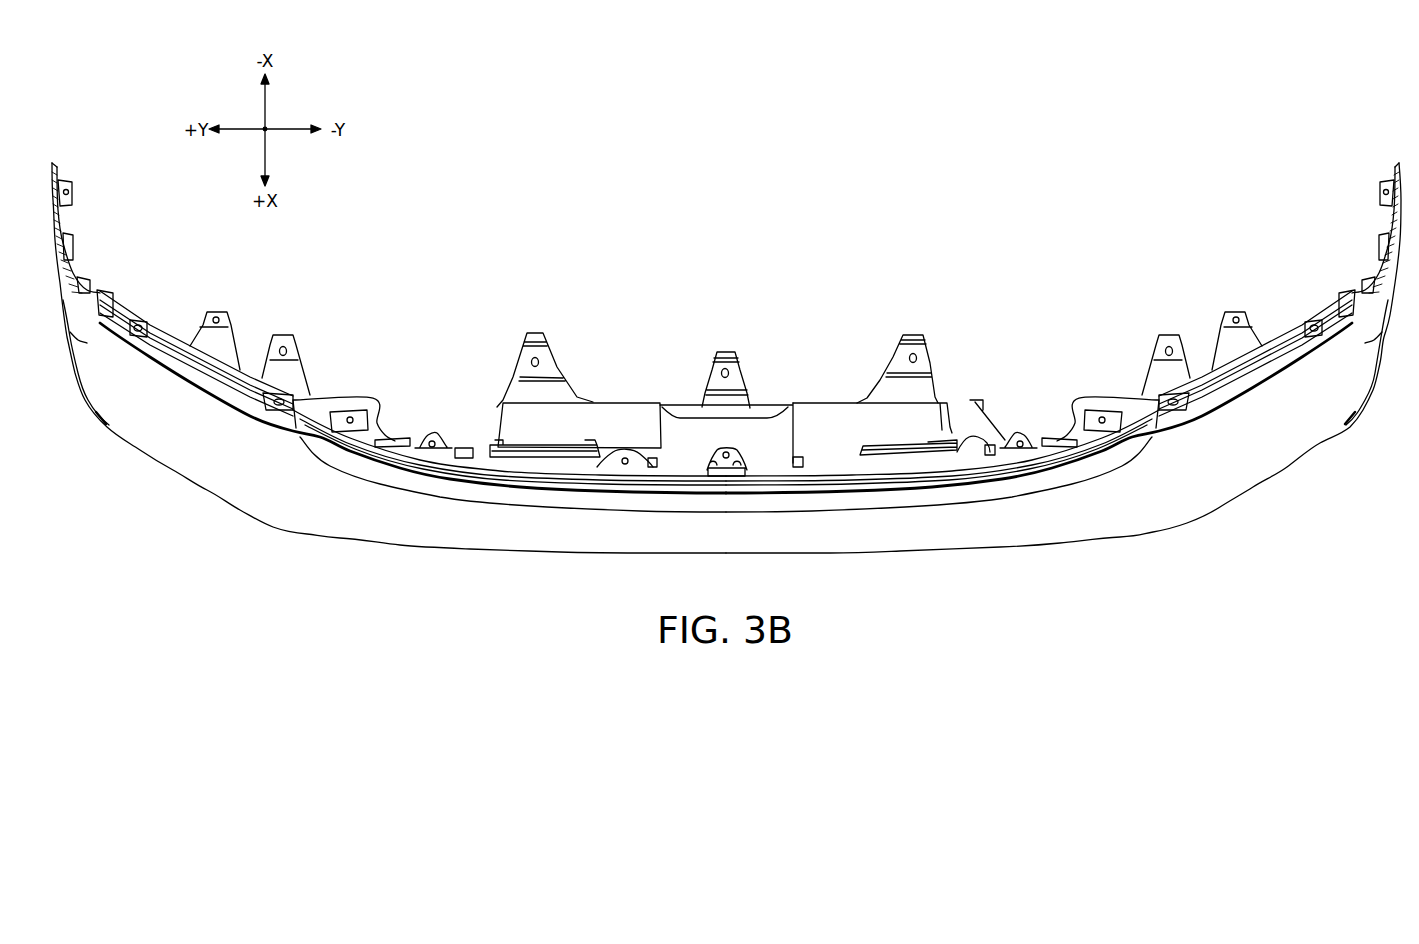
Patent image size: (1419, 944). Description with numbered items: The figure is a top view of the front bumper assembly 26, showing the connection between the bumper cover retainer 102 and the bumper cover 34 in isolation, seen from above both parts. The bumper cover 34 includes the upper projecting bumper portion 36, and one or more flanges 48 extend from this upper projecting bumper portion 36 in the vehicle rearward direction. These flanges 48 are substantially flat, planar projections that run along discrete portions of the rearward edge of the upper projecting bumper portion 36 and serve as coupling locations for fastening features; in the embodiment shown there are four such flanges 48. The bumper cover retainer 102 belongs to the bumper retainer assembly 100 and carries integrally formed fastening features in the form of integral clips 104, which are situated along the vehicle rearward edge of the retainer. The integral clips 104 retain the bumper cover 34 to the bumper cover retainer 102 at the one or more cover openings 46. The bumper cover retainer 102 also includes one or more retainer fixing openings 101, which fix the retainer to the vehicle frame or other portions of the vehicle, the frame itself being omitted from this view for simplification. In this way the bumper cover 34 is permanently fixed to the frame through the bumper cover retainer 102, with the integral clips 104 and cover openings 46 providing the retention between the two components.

The bumper retainer assembly 100 is at (545, 260).
The front bumper assembly 26 is at (318, 563).
The bumper cover 34 is at (893, 492).
The upper projecting bumper portion 36 is at (523, 543).
The cover openings 46 is at (453, 452).
The flanges 48 is at (452, 447).
The retainer fixing openings 101 is at (532, 360).
The bumper cover retainer 102 is at (403, 442).
The integral clips 104 is at (483, 448).